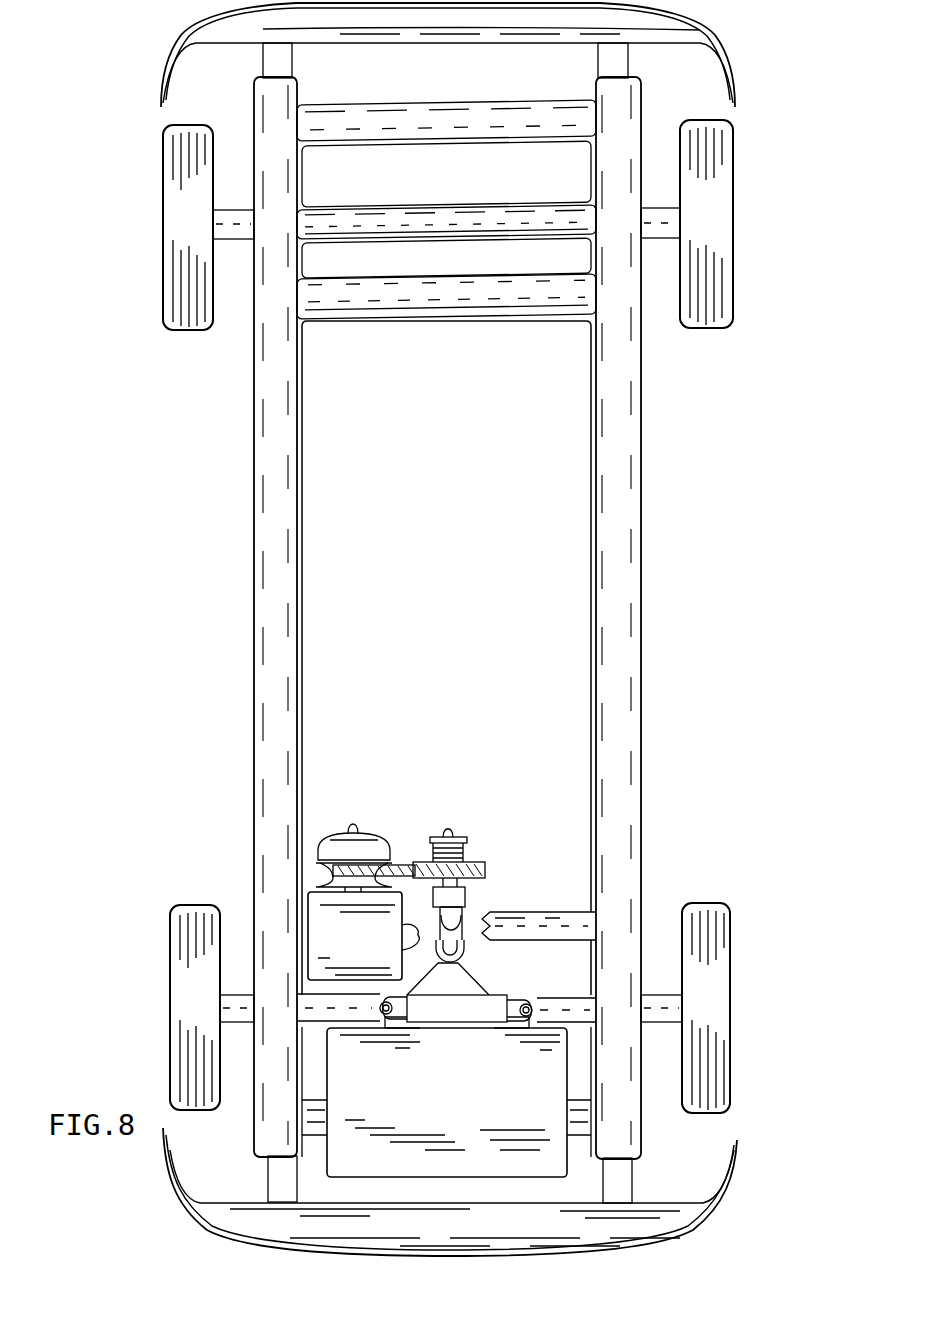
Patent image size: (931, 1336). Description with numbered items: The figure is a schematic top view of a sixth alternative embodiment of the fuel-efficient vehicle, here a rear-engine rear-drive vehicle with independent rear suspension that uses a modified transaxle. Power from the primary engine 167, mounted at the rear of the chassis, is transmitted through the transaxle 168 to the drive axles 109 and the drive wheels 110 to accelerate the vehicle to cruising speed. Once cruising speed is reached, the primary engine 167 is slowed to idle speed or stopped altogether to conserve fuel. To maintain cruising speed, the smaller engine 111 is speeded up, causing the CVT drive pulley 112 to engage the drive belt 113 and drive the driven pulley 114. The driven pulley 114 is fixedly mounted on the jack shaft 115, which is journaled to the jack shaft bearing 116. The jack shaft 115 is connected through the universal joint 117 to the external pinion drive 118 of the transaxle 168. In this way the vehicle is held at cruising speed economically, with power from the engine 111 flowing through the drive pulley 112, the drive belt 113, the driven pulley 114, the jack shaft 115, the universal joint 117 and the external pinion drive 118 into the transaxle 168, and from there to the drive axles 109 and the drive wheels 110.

The drive axle 109 is at (240, 993).
The drive wheel 110 is at (173, 966).
The engine 111 is at (376, 948).
The CVT drive pulley 112 is at (329, 832).
The drive belt 113 is at (398, 865).
The driven pulley 114 is at (485, 862).
The jack shaft 115 is at (448, 828).
The jack shaft bearing 116 is at (467, 897).
The universal joint 117 is at (466, 948).
The external pinion drive 118 is at (466, 958).
The primary engine 167 is at (461, 1115).
The transaxle 168 is at (476, 1020).